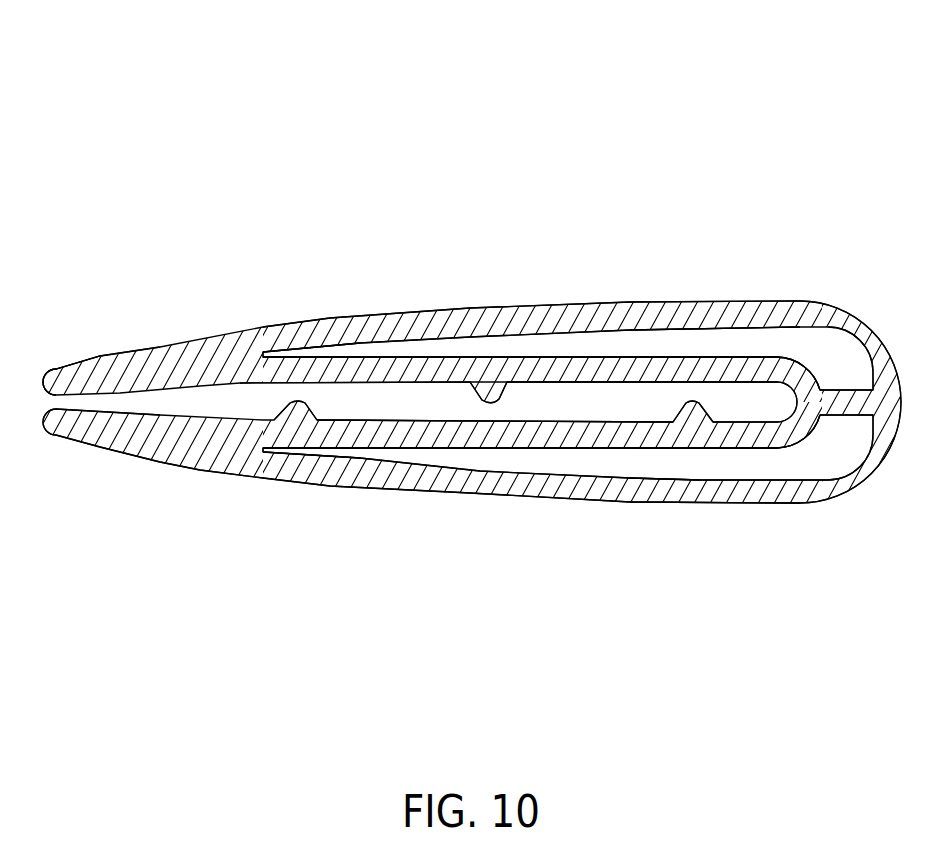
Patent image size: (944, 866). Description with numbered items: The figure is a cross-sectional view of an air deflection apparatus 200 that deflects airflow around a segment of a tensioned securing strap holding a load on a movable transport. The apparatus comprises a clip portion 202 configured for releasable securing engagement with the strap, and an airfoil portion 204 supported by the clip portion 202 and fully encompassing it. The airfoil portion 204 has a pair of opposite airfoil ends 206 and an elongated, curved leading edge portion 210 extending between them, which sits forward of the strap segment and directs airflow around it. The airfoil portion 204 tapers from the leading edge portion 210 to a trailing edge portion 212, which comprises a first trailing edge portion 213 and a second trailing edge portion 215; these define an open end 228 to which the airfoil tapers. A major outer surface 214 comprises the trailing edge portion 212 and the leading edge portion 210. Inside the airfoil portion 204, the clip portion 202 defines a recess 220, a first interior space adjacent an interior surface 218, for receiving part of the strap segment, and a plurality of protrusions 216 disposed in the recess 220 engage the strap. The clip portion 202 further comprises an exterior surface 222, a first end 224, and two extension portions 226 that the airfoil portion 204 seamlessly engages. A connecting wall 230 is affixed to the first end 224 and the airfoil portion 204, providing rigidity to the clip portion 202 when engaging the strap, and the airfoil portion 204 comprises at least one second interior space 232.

The air deflection apparatus 200 is at (252, 185).
The clip portion 202 is at (722, 435).
The airfoil portion 204 is at (430, 315).
The airfoil ends 206 is at (93, 368).
The leading edge portion 210 is at (817, 272).
The trailing edge portion 212 is at (138, 490).
The first trailing edge portion 213 is at (80, 447).
The major outer surface 214 is at (448, 493).
The second trailing edge portion 215 is at (64, 358).
The protrusions 216 is at (292, 403).
The interior surface 218 is at (512, 428).
The recess 220 is at (597, 407).
The exterior surface 222 is at (602, 352).
The first end 224 is at (812, 405).
The extension portions 226 is at (378, 378).
The open end 228 is at (50, 408).
The connecting wall 230 is at (860, 392).
The second interior space 232 is at (768, 342).